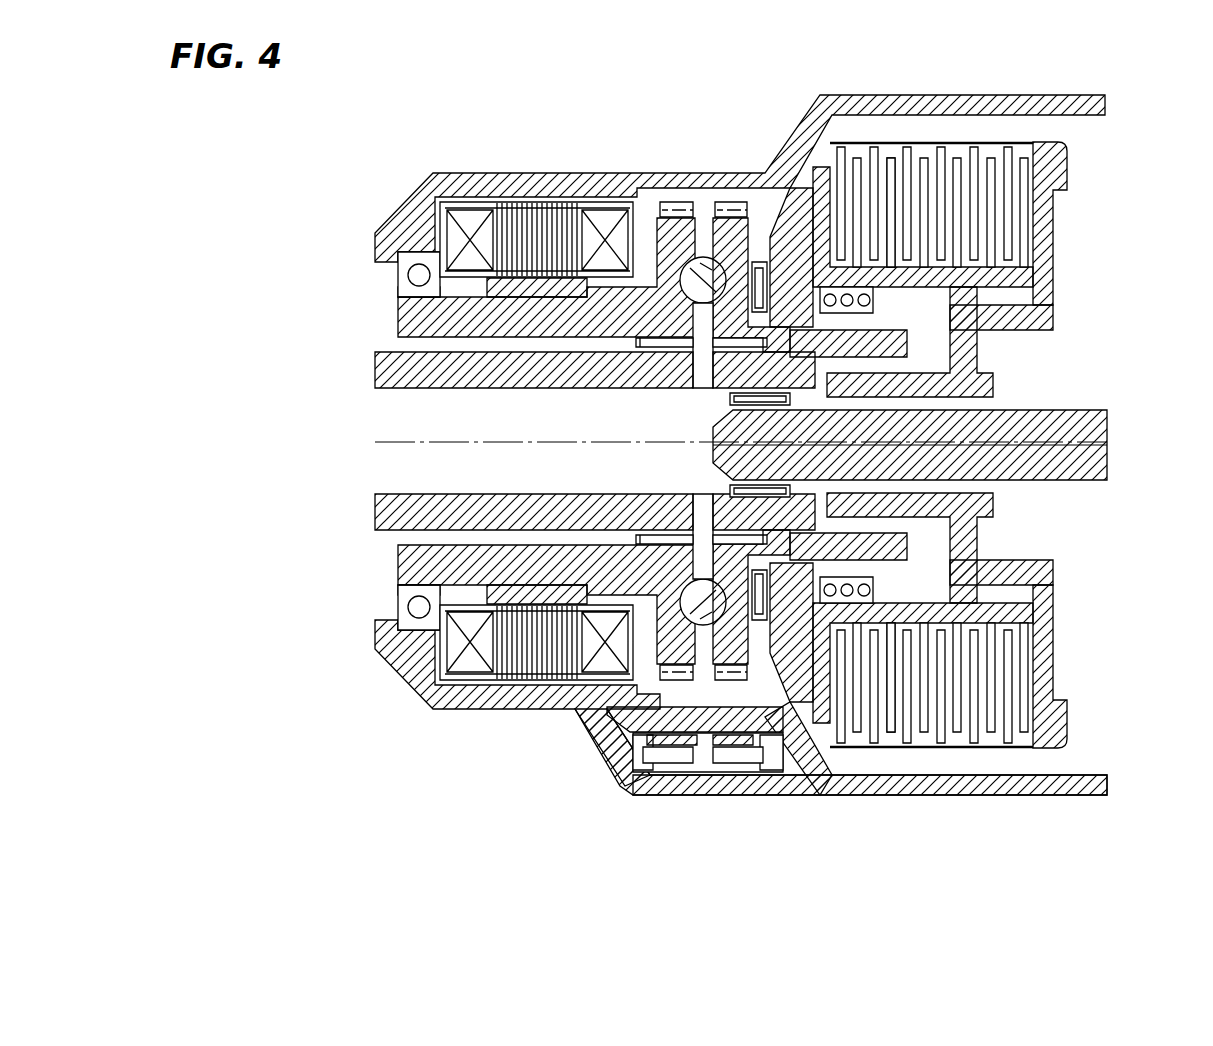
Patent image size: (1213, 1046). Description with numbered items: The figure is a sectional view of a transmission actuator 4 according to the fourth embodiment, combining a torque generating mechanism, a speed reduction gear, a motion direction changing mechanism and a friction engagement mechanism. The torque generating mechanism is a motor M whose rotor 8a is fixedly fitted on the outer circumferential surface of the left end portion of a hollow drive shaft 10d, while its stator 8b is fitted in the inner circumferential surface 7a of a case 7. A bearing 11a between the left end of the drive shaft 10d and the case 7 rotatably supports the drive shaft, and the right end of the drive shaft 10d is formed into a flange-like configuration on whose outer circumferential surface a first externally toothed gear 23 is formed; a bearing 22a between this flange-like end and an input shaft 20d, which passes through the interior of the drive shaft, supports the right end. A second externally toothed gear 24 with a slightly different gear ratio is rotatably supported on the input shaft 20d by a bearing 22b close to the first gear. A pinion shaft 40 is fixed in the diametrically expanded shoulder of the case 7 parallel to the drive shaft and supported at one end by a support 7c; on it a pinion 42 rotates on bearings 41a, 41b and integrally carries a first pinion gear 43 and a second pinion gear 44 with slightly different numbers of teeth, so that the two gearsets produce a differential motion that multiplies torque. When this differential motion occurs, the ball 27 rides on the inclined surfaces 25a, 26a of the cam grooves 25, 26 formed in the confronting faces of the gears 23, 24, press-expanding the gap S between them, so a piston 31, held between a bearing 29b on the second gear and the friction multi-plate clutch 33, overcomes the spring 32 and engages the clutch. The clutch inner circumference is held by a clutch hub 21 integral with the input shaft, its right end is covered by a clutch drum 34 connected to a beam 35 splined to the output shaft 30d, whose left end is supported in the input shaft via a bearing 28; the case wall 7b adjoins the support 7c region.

The transmission actuator 4 is at (477, 156).
The case 7 is at (590, 176).
The inner circumferential surface 7a is at (637, 193).
The housing slanted wall 7b is at (630, 760).
The support 7c is at (820, 776).
The rotor 8a is at (552, 215).
The stator 8b is at (522, 207).
The motor M is at (563, 117).
The hollow drive shaft 10d is at (402, 312).
The bearing 11a is at (405, 277).
The input shaft 20d is at (380, 358).
The clutch hub 21 is at (893, 328).
The bearing 22a is at (655, 340).
The bearing 22b is at (716, 412).
The first externally toothed gear 23 is at (664, 203).
The second externally toothed gear 24 is at (726, 218).
The cam groove 25 is at (770, 237).
The inclined surface 25a is at (759, 262).
The cam groove 26 is at (690, 346).
The inclined surface 26a is at (716, 346).
The ball 27 is at (700, 260).
The bearing 28 is at (878, 357).
The bearing 29b is at (824, 175).
The output shaft 30d is at (1050, 408).
The piston 31 is at (878, 195).
The spring 32 is at (925, 210).
The friction multi-plate clutch 33 is at (1033, 190).
The clutch drum 34 is at (1055, 250).
The beam 35 is at (1040, 332).
The clearance S is at (723, 376).
The pinion shaft 40 is at (605, 713).
The bearing 41a is at (641, 768).
The bearing 41b is at (763, 765).
The pinion 42 is at (747, 844).
The first pinion gear 43 is at (681, 763).
The second pinion gear 44 is at (737, 763).